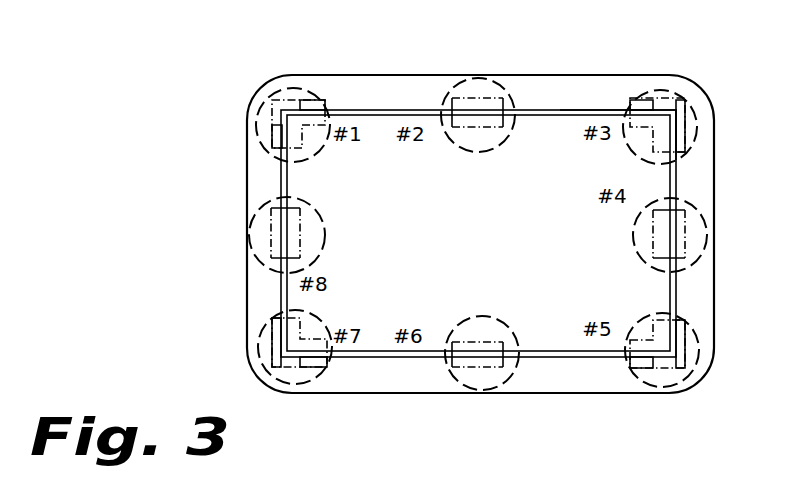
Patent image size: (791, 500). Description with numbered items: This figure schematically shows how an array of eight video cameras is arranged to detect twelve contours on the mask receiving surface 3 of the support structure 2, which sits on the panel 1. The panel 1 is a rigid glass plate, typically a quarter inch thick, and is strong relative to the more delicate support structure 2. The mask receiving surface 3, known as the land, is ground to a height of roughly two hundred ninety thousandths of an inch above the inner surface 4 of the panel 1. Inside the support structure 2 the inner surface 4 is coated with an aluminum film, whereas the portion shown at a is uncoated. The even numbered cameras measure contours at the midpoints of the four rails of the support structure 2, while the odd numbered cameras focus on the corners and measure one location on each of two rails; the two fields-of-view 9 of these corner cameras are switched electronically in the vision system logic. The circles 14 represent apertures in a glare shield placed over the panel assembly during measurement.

The panel 1 is at (368, 75).
The support structure 2 is at (545, 118).
The mask receiving surface 3 is at (605, 112).
The inner surface 4 is at (446, 255).
The fields-of-view 9 is at (307, 98).
The circles 14 is at (273, 80).
The uncoated portion of inner surface a is at (578, 92).